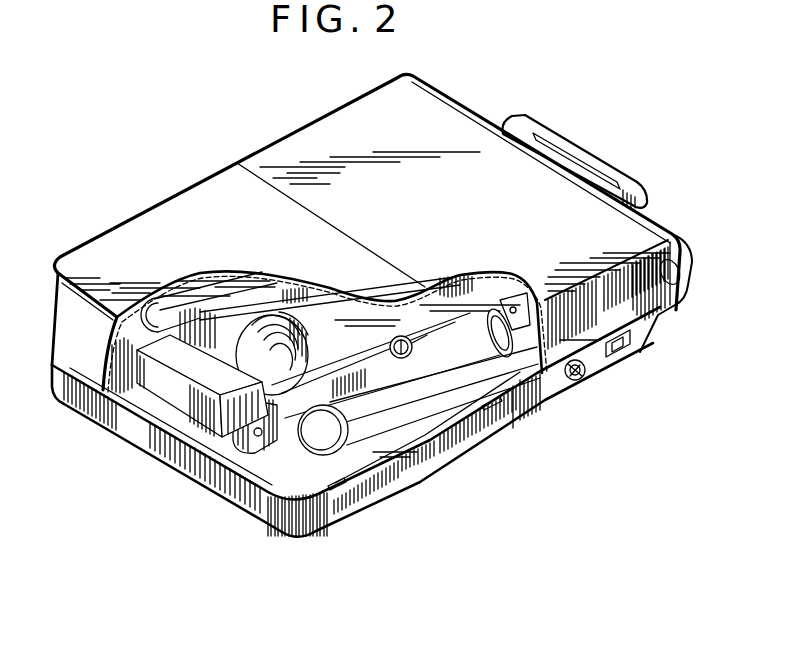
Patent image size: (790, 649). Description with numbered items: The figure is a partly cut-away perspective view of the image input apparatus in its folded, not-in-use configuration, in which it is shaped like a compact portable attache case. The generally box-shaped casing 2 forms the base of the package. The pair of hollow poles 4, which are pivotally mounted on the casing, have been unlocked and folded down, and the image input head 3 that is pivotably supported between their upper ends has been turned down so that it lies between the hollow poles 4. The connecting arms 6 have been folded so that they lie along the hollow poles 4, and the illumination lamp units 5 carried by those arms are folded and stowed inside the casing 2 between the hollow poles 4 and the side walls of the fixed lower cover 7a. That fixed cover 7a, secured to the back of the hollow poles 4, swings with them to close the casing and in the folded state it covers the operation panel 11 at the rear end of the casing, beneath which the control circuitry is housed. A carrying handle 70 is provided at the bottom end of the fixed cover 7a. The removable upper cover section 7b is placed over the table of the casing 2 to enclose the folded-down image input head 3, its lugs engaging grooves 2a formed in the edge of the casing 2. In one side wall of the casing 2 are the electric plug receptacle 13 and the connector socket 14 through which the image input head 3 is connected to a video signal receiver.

The operation panel 11 is at (127, 207).
The fixed lower cover 7a is at (362, 118).
The removable upper cover section 7b is at (200, 203).
The carrying handle 70 is at (580, 143).
The casing 2 is at (415, 483).
The grooves 2a is at (497, 407).
The image input head 3 is at (165, 401).
The hollow poles 4 is at (285, 420).
The illumination lamp units 5 is at (447, 388).
The connecting arms 6 is at (467, 303).
The electric plug receptacle 13 is at (630, 355).
The connector socket 14 is at (578, 380).